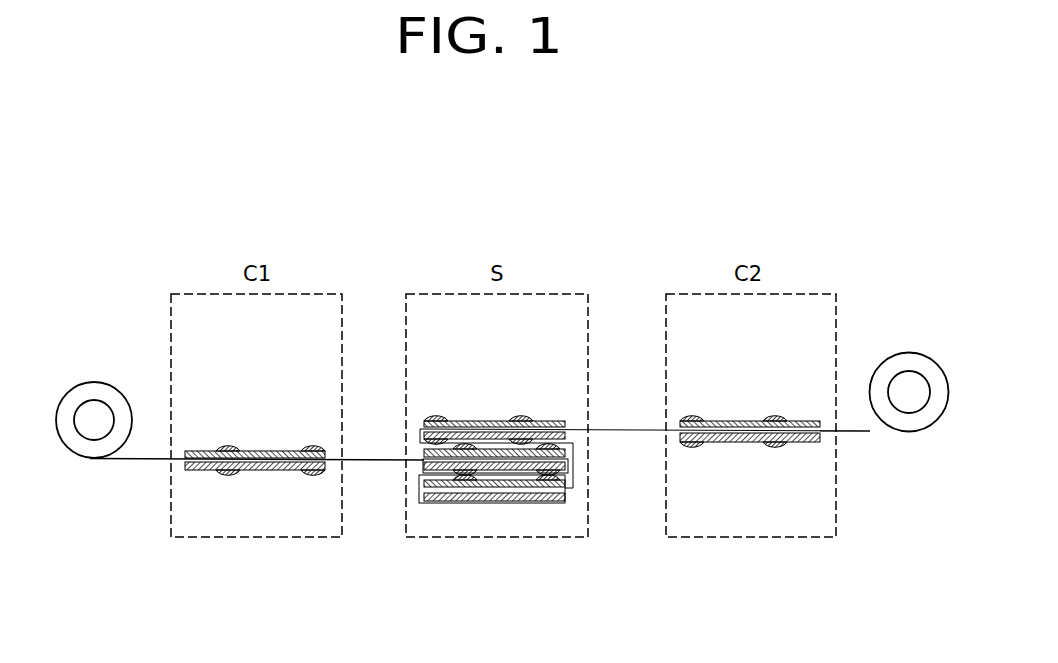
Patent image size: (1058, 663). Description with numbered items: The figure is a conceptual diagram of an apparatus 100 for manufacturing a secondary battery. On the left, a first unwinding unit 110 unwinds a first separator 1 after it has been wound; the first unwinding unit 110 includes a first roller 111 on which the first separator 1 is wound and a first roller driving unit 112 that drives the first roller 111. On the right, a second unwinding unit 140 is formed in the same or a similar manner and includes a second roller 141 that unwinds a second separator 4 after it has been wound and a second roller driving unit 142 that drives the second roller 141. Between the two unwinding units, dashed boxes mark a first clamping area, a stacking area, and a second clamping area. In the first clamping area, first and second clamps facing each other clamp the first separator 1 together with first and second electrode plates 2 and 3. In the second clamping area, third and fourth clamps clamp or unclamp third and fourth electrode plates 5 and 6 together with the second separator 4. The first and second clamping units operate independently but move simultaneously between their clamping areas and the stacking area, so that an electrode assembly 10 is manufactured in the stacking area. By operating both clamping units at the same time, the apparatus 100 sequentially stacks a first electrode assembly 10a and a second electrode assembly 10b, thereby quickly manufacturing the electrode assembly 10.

The first separator 1 is at (138, 461).
The first electrode plate 2 is at (266, 471).
The second electrode plate 3 is at (267, 452).
The second separator 4 is at (868, 433).
The third electrode plate 5 is at (750, 443).
The fourth electrode plate 6 is at (804, 421).
The electrode assembly 10 is at (476, 541).
The first electrode assembly 10a is at (442, 470).
The second electrode assembly 10b is at (474, 503).
The apparatus for manufacturing a secondary battery 100 is at (396, 218).
The first unwinding unit 110 is at (100, 370).
The first roller 111 is at (121, 393).
The first roller driving unit 112 is at (78, 383).
The second unwinding unit 140 is at (903, 351).
The second roller 141 is at (885, 383).
The second roller driving unit 142 is at (925, 363).